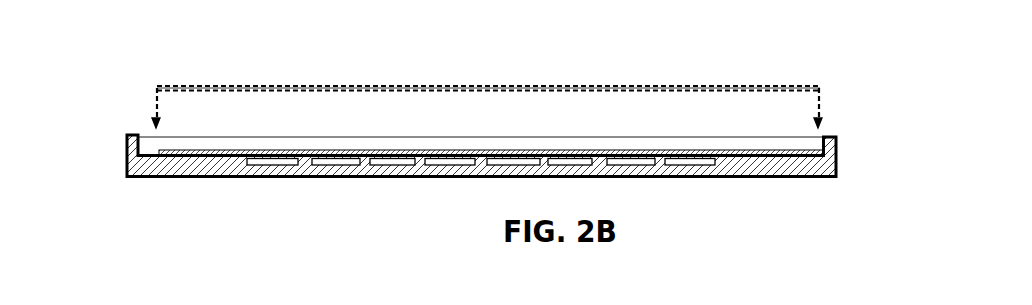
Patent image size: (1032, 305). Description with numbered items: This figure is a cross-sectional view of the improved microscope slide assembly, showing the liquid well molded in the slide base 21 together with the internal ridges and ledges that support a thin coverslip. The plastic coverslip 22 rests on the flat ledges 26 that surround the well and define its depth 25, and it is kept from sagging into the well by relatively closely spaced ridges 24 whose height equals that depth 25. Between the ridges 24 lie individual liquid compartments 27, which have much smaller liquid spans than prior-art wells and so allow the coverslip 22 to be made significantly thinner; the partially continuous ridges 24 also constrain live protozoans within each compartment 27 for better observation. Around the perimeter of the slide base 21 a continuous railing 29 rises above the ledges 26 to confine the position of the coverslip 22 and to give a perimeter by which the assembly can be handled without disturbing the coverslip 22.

The slide base 21 is at (207, 177).
The coverslip 22 is at (313, 87).
The ridges 24 is at (487, 160).
The depth of the well 25 is at (438, 176).
The ledges 26 is at (212, 150).
The liquid compartments 27 is at (386, 160).
The railing 29 is at (628, 136).